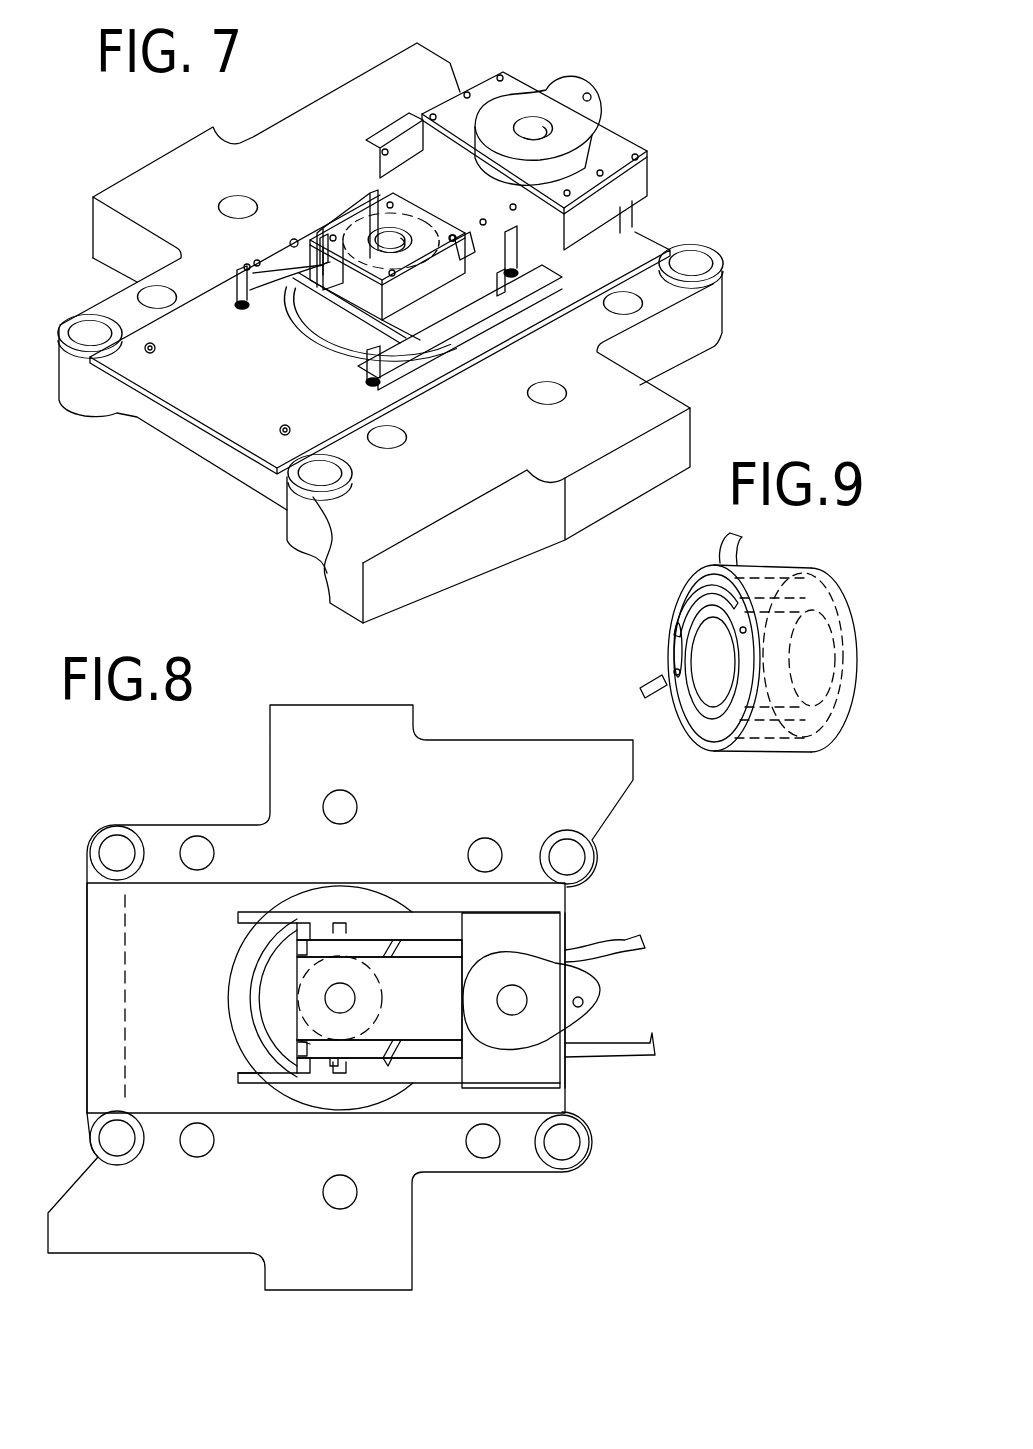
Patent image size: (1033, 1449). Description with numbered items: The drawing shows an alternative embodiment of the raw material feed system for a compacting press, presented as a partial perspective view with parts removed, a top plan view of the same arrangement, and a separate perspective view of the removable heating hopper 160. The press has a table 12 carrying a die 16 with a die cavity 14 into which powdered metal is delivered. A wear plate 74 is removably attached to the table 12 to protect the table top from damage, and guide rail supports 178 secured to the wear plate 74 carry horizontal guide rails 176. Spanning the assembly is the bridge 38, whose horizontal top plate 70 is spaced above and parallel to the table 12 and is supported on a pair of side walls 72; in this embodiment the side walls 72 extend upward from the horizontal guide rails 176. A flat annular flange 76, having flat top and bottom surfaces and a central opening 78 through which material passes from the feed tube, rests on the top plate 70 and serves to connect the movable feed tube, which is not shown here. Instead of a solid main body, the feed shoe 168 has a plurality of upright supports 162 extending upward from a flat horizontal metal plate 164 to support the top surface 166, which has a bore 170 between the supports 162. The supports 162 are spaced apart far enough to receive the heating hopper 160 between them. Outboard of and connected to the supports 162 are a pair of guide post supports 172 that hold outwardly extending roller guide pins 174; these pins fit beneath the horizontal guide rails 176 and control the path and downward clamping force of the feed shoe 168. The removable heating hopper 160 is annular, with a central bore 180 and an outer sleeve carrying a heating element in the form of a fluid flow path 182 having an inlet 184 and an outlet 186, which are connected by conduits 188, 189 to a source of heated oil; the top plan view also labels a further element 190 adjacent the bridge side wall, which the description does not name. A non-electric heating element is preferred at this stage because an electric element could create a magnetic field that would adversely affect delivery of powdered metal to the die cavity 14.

In FIG. 7, the table 12 is at (707, 303).
In FIG. 8, the table 12 is at (380, 1270).
In FIG. 7, the die cavity 14 is at (337, 332).
In FIG. 8, the die cavity 14 is at (278, 1007).
In FIG. 7, the die 16 is at (337, 312).
In FIG. 8, the die 16 is at (262, 988).
In FIG. 7, the bridge 38 is at (561, 99).
In FIG. 8, the bridge 38 is at (564, 932).
In FIG. 7, the top plate 70 is at (598, 155).
In FIG. 8, the top plate 70 is at (533, 1063).
In FIG. 7, the side walls 72 is at (420, 150).
In FIG. 8, the side walls 72 is at (430, 925).
In FIG. 7, the wear plate 74 is at (633, 247).
In FIG. 8, the wear plate 74 is at (537, 907).
In FIG. 7, the flange 76 is at (570, 93).
In FIG. 8, the flange 76 is at (585, 985).
In FIG. 7, the central opening 78 is at (547, 130).
In FIG. 8, the central opening 78 is at (513, 1005).
In FIG. 7, the removable heating hopper 160 is at (436, 228).
In FIG. 8, the removable heating hopper 160 is at (428, 990).
In FIG. 9, the removable heating hopper 160 is at (667, 639).
In FIG. 7, the upright supports 162 is at (294, 256).
In FIG. 8, the upright supports 162 is at (285, 1048).
In FIG. 7, the plate 164 is at (370, 300).
In FIG. 8, the plate 164 is at (400, 952).
In FIG. 7, the top surface 166 is at (468, 240).
In FIG. 8, the top surface 166 is at (367, 945).
In FIG. 7, the feed shoe 168 is at (362, 225).
In FIG. 8, the feed shoe 168 is at (354, 1038).
In FIG. 7, the bore 170 is at (385, 228).
In FIG. 8, the bore 170 is at (338, 995).
In FIG. 7, the guide post supports 172 is at (323, 265).
In FIG. 8, the guide post supports 172 is at (310, 940).
In FIG. 8, the roller guide pins 174 is at (333, 1066).
In FIG. 7, the horizontal guide rails 176 is at (320, 238).
In FIG. 8, the horizontal guide rails 176 is at (390, 1065).
In FIG. 7, the guide rail supports 178 is at (236, 293).
In FIG. 8, the guide rail supports 178 is at (262, 1080).
In FIG. 9, the central bore 180 is at (717, 680).
In FIG. 9, the fluid flow path 182 is at (705, 728).
In FIG. 9, the inlet 184 is at (763, 577).
In FIG. 9, the outlet 186 is at (660, 672).
In FIG. 8, the conduit 188 is at (700, 1035).
In FIG. 9, the conduit 188 is at (737, 537).
In FIG. 9, the conduit 189 is at (640, 697).
In FIG. 8, the tension spring 190 is at (633, 945).